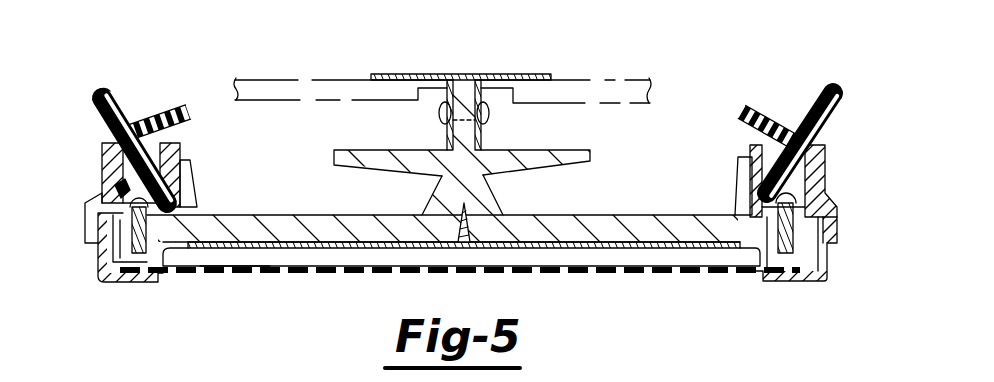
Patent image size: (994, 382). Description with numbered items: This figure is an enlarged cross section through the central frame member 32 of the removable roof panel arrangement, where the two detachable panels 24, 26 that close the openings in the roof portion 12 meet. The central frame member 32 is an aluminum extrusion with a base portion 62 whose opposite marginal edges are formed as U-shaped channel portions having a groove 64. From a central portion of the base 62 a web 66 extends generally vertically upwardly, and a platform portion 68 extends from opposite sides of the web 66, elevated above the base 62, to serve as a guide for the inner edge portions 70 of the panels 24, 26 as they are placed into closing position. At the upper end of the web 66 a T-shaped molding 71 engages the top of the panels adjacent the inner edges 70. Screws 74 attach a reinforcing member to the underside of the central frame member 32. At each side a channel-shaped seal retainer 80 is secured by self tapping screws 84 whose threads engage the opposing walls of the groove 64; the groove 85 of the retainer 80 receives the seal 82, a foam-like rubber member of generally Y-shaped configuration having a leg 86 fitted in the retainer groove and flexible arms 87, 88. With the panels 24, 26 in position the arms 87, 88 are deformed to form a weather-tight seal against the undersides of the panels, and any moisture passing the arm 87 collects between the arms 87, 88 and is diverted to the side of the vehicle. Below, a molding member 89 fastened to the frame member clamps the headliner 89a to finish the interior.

The roof portion 12 is at (305, 268).
The detachable panel 24 is at (322, 90).
The detachable panel 26 is at (618, 88).
The central frame member 32 is at (443, 67).
The base portion 62 is at (616, 232).
The groove 64 is at (173, 273).
The web 66 is at (480, 203).
The platform portion 68 is at (503, 163).
The inner edge portion 70 is at (407, 93).
The T-shaped molding 71 is at (495, 75).
The screw 74 is at (464, 244).
The seal retainer 80 is at (102, 150).
The seal 82 is at (162, 82).
The self tapping screw 84 is at (150, 225).
The groove 85 is at (183, 165).
The leg 86 is at (127, 156).
The arm 87 is at (110, 92).
The arm 88 is at (192, 110).
The molding member 89 is at (137, 284).
The headliner 89a is at (270, 280).